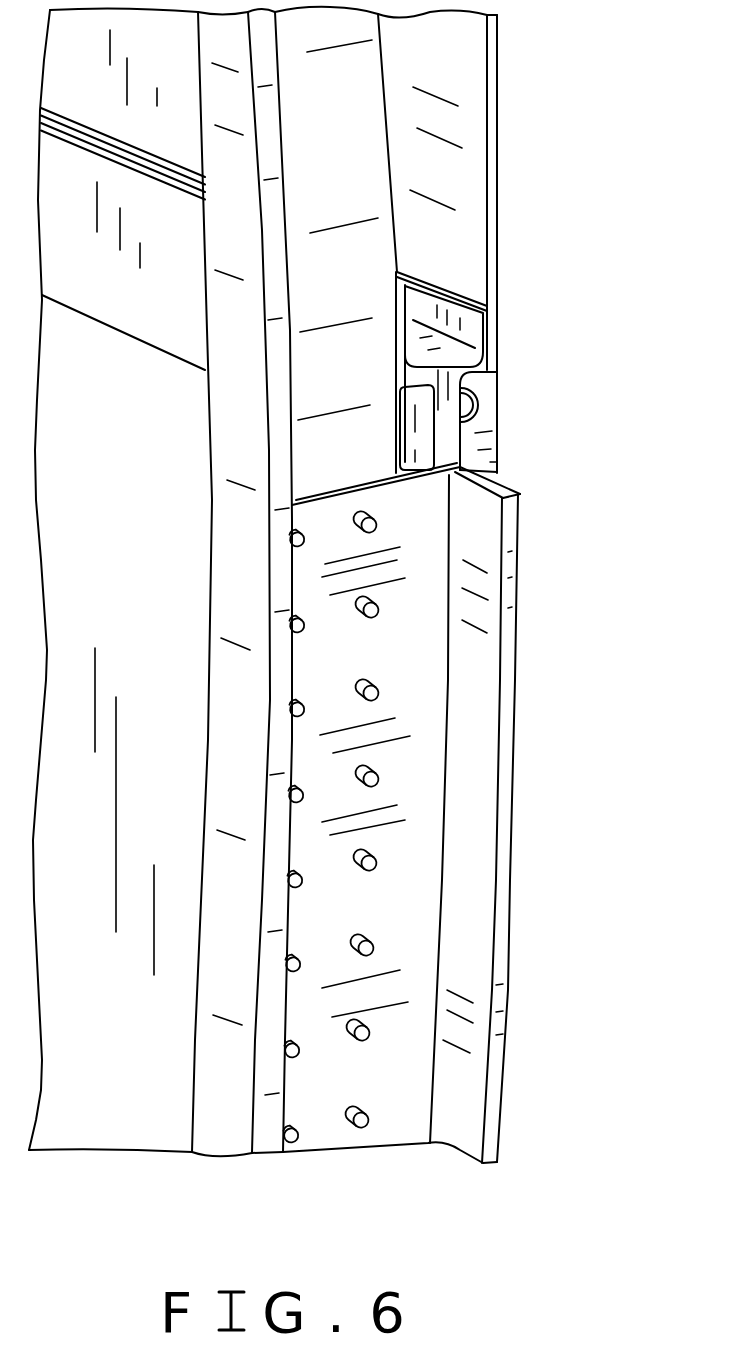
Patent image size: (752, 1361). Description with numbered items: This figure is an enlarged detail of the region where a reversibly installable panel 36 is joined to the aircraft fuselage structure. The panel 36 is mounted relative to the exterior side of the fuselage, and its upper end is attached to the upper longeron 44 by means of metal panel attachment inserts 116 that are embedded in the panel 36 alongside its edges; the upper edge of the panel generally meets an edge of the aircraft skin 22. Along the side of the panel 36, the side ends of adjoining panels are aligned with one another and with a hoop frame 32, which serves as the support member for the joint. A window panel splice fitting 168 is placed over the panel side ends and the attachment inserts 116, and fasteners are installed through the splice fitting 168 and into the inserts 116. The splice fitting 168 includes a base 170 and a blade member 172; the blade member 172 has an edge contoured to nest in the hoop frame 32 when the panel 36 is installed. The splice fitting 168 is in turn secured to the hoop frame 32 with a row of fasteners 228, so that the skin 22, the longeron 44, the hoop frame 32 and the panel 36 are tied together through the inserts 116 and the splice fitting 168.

The skin 22 is at (500, 197).
The hoop frame 32 is at (223, 1138).
The panel 36 is at (136, 555).
The upper longeron 44 is at (483, 363).
The panel attachment insert 116 is at (475, 412).
The splice fitting 168 is at (476, 798).
The base 170 is at (470, 655).
The blade member 172 is at (388, 933).
The fastener 228 is at (380, 863).